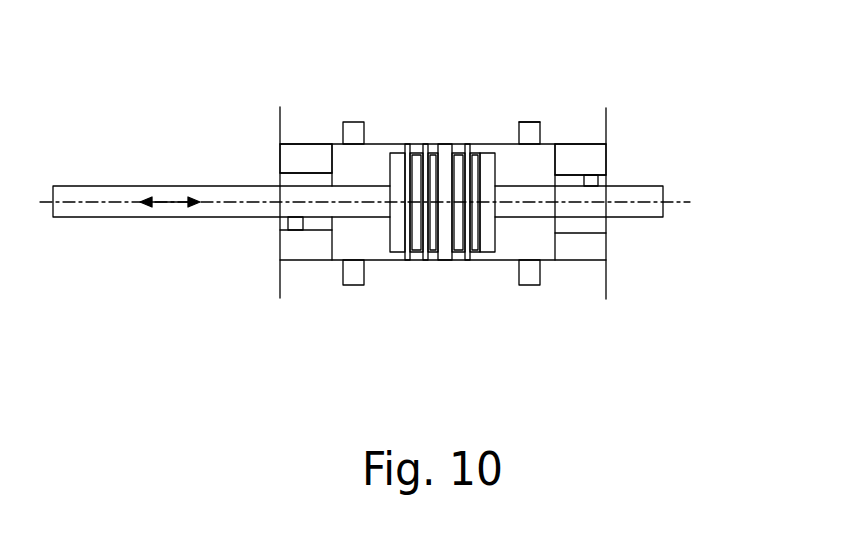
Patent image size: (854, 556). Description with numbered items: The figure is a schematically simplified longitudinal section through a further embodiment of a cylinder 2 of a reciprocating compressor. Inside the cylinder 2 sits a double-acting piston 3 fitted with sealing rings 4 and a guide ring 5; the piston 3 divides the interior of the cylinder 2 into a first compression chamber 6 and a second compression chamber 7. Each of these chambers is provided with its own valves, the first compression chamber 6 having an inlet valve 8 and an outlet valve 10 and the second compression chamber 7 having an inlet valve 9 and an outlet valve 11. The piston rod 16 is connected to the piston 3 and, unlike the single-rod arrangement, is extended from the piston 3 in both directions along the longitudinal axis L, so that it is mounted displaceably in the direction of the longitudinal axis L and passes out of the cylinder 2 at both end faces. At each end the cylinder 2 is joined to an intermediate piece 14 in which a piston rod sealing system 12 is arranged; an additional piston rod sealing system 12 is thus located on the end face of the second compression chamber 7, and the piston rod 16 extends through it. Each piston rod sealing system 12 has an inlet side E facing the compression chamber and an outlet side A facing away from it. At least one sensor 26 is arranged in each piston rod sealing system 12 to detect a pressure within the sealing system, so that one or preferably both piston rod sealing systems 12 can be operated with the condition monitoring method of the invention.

The cylinder 2 is at (396, 252).
The piston 3 is at (487, 252).
The sealing rings 4 is at (461, 158).
The guide ring 5 is at (445, 252).
The first compression chamber 6 is at (381, 172).
The second compression chamber 7 is at (507, 175).
The inlet valve 8 is at (350, 133).
The inlet valve 9 is at (533, 137).
The outlet valve 10 is at (352, 276).
The outlet valve 11 is at (528, 278).
The piston rod sealing system 12 is at (313, 172).
The intermediate piece 14 is at (296, 152).
The piston rod 16 is at (224, 204).
The sensor 26 is at (297, 223).
The outlet side A is at (279, 184).
The inlet side E is at (554, 183).
The longitudinal axis L is at (618, 202).